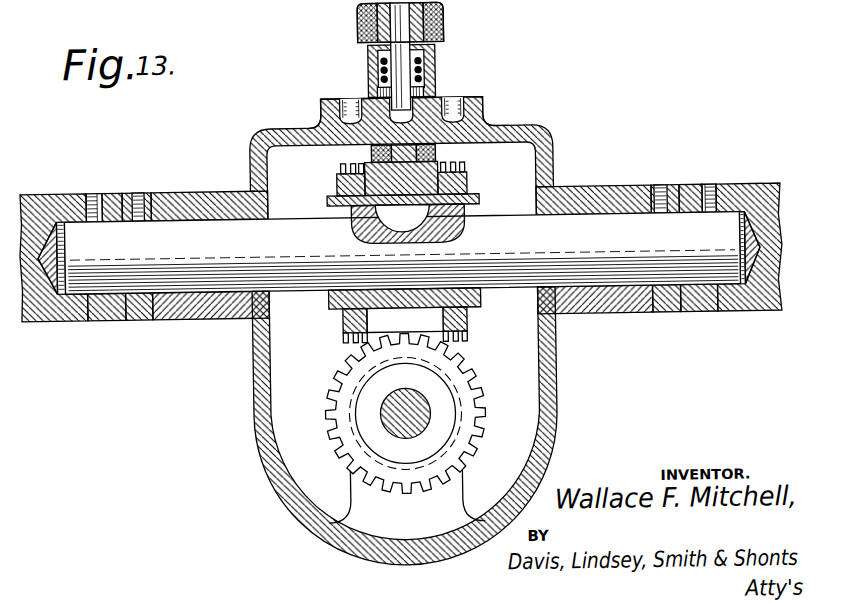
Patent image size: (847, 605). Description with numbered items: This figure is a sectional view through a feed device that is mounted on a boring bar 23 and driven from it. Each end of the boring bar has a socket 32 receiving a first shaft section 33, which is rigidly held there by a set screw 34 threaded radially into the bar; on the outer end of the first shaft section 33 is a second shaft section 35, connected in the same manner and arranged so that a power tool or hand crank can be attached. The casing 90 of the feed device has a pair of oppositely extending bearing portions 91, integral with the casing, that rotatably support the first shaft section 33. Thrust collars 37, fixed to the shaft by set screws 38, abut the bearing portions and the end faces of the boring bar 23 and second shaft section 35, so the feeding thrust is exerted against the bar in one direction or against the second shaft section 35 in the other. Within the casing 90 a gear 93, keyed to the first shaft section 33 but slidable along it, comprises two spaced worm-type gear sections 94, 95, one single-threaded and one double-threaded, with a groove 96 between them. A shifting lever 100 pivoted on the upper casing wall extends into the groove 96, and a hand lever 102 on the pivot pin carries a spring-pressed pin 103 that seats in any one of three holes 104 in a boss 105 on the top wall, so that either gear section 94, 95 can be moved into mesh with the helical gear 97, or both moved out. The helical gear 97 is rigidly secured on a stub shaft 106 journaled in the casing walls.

The boring bar 23 is at (41, 188).
The socket 32 is at (91, 317).
The first shaft section 33 is at (184, 226).
The set screw 34 is at (98, 188).
The second shaft section 35 is at (746, 189).
The thrust collar 37 is at (141, 308).
The set screw 38 is at (139, 188).
The casing 90 is at (556, 410).
The bearing portion 91 is at (198, 305).
The gear 93 is at (468, 189).
The gear section 94 is at (462, 316).
The gear section 95 is at (343, 316).
The groove 96 is at (356, 222).
The helical gear 97 is at (463, 394).
The shifting lever 100 is at (437, 156).
The hand lever 102 is at (438, 70).
The spring-pressed pin 103 is at (447, 27).
The hole 104 is at (353, 104).
The boss 105 is at (486, 112).
The stub shaft 106 is at (424, 420).